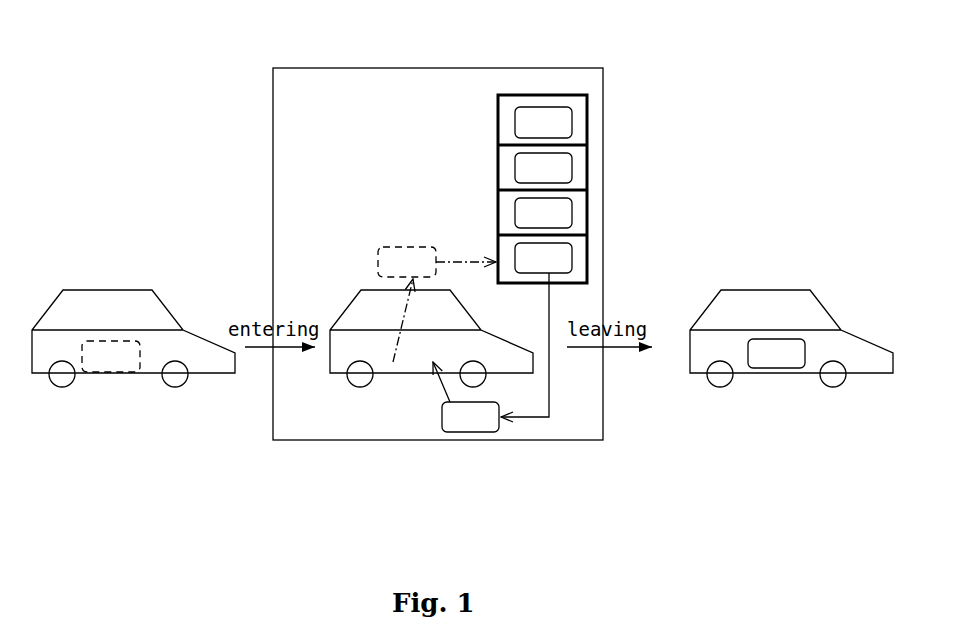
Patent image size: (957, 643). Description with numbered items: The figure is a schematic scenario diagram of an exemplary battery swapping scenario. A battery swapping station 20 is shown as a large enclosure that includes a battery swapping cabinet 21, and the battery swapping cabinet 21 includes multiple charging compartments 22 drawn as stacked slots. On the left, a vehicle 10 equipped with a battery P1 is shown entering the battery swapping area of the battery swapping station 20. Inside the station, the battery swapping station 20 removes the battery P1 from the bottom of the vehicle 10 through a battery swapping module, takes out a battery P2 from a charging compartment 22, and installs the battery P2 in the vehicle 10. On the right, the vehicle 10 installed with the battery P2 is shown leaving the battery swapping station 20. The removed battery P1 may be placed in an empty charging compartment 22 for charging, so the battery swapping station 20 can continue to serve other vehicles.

The vehicle 10 is at (152, 290).
The battery swapping station 20 is at (493, 65).
The battery swapping cabinet 21 is at (543, 93).
The charging compartment 22 is at (582, 122).
The battery P1 is at (110, 375).
The battery P2 is at (485, 432).